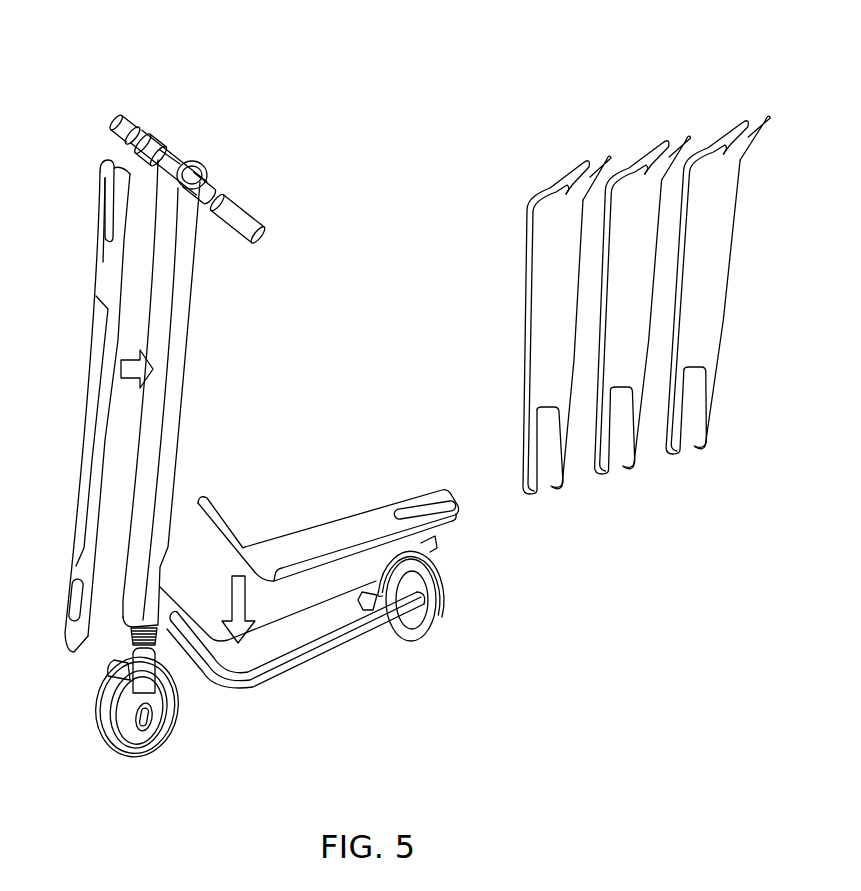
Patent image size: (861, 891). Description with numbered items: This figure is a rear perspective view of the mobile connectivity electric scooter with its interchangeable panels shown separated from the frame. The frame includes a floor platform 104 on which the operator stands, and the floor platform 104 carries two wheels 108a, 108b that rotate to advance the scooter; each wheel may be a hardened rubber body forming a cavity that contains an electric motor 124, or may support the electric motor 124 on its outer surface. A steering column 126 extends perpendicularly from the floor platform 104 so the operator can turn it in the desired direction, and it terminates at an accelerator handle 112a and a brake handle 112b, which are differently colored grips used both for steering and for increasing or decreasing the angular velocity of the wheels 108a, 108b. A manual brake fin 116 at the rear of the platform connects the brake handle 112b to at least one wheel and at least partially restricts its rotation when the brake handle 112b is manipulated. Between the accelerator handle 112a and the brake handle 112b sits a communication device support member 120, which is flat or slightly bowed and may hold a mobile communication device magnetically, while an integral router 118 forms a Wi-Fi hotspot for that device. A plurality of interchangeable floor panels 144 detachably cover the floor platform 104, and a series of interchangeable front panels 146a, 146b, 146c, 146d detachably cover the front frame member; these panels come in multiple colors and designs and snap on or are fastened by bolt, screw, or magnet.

The floor platform 104 is at (317, 640).
The wheel 108a is at (110, 720).
The wheel 108b is at (418, 628).
The accelerator handle 112a is at (209, 177).
The brake handle 112b is at (144, 135).
The manual brake fin 116 is at (440, 580).
The integral router 118 is at (175, 161).
The communication device support member 120 is at (173, 212).
The electric motor 124 is at (132, 733).
The steering column 126 is at (178, 376).
The interchangeable floor panels 144 is at (332, 525).
The interchangeable front panel 146a is at (102, 263).
The interchangeable front panel 146b is at (557, 178).
The interchangeable front panel 146c is at (648, 150).
The interchangeable front panel 146d is at (720, 130).